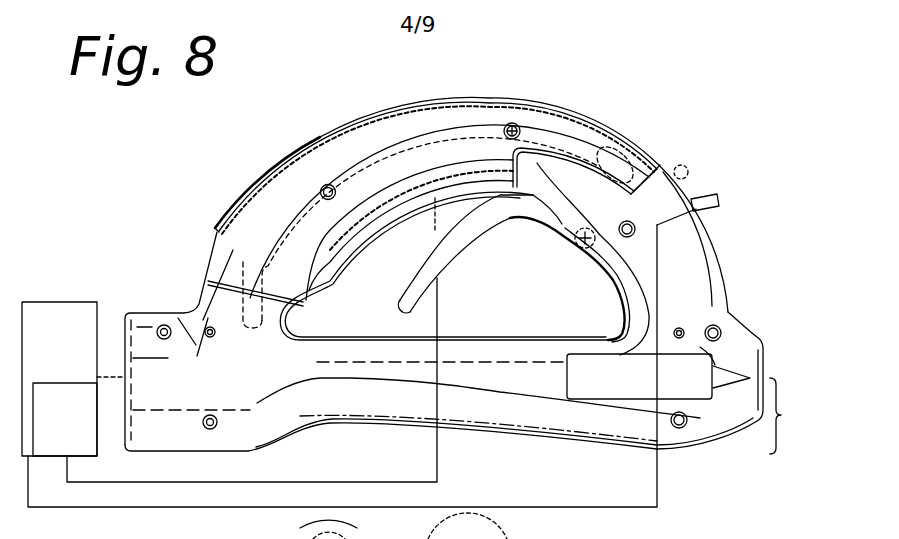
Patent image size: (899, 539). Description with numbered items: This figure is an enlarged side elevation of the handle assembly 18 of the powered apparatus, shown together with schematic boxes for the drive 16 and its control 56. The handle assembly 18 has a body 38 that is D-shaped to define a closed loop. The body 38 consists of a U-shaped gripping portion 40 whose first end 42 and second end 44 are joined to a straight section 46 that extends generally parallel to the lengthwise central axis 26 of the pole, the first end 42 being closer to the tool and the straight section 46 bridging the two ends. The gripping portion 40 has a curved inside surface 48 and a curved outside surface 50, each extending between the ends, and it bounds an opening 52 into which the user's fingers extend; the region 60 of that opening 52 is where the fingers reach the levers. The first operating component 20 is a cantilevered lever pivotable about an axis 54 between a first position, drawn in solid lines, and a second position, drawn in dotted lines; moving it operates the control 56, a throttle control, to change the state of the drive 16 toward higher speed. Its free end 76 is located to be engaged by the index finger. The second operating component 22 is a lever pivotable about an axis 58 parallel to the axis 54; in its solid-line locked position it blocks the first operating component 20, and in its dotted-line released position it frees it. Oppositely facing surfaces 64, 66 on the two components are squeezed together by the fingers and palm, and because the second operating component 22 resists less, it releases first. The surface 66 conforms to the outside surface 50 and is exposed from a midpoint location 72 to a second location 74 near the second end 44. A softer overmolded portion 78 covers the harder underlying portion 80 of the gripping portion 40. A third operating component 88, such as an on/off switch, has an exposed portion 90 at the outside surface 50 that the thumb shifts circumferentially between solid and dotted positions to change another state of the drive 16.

The drive 16 is at (59, 379).
The handle assembly 18 is at (660, 113).
The first operating component 20 is at (437, 228).
The second operating component 22 is at (248, 180).
The central axis 26 is at (775, 455).
The body 38 is at (688, 268).
The gripping portion 40 is at (460, 153).
The first end 42 is at (699, 315).
The second end 44 is at (251, 278).
The straight section 46 is at (548, 413).
The inside surface 48 is at (360, 242).
The outside surface 50 is at (548, 244).
The opening 52 is at (398, 215).
The axis 54 is at (567, 252).
The control 56 is at (65, 419).
The axis 58 is at (517, 123).
The region 60 is at (634, 162).
The surface 64 is at (482, 232).
The surface 66 is at (432, 103).
The midpoint location 72 is at (463, 89).
The second location 74 is at (210, 219).
The free end 76 is at (398, 310).
The overmolded portion 78 is at (343, 177).
The underlying portion 80 is at (608, 125).
The third operating component 88 is at (680, 168).
The exposed portion 90 is at (719, 206).